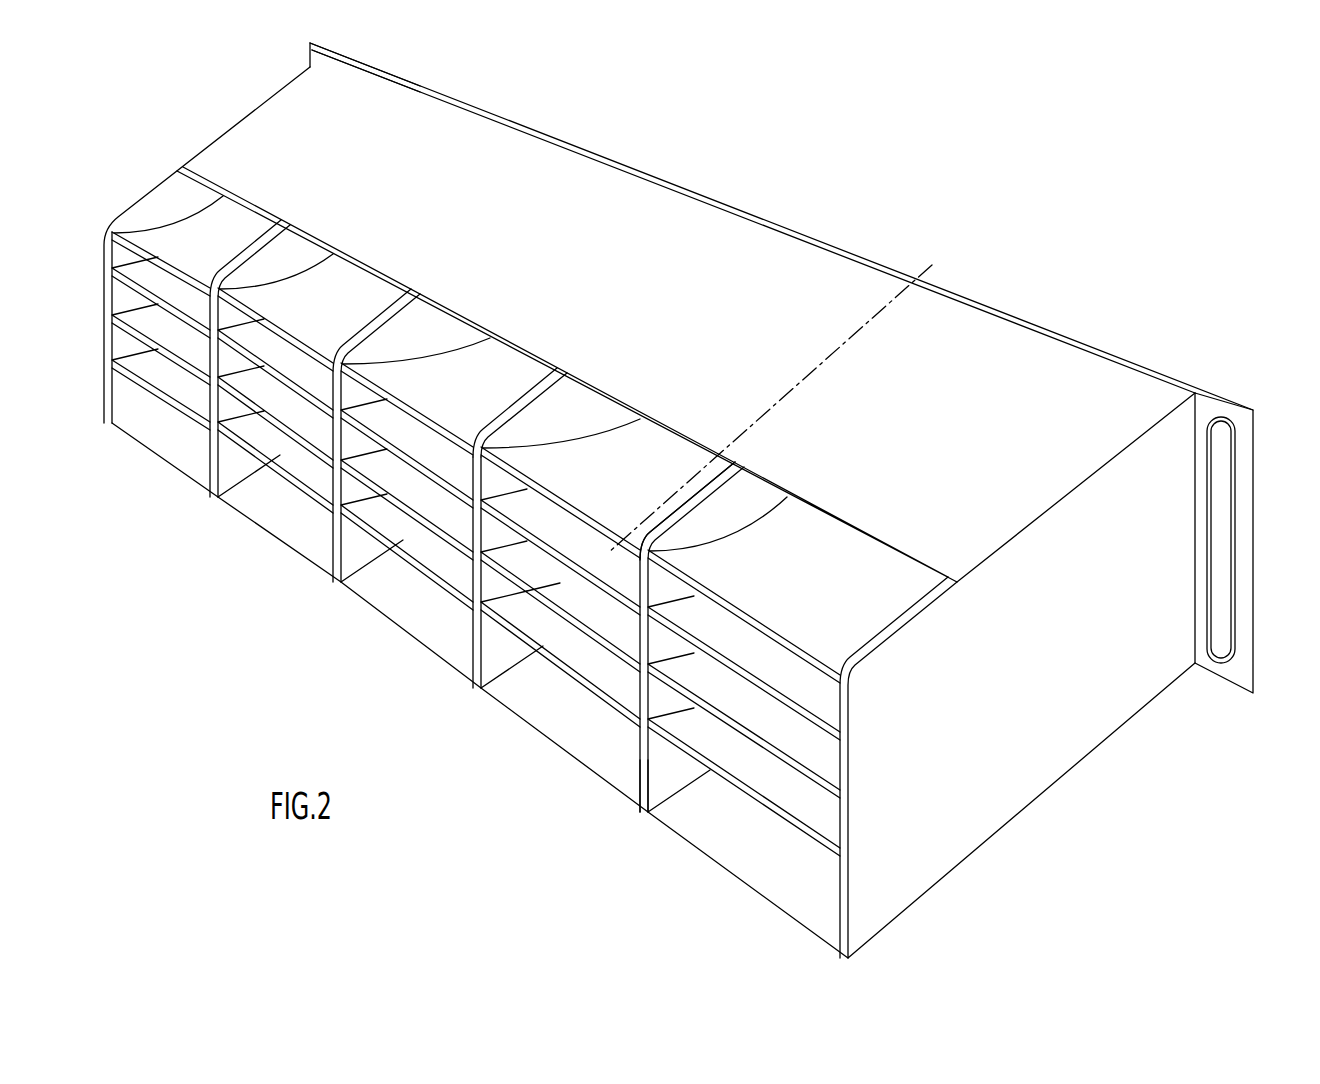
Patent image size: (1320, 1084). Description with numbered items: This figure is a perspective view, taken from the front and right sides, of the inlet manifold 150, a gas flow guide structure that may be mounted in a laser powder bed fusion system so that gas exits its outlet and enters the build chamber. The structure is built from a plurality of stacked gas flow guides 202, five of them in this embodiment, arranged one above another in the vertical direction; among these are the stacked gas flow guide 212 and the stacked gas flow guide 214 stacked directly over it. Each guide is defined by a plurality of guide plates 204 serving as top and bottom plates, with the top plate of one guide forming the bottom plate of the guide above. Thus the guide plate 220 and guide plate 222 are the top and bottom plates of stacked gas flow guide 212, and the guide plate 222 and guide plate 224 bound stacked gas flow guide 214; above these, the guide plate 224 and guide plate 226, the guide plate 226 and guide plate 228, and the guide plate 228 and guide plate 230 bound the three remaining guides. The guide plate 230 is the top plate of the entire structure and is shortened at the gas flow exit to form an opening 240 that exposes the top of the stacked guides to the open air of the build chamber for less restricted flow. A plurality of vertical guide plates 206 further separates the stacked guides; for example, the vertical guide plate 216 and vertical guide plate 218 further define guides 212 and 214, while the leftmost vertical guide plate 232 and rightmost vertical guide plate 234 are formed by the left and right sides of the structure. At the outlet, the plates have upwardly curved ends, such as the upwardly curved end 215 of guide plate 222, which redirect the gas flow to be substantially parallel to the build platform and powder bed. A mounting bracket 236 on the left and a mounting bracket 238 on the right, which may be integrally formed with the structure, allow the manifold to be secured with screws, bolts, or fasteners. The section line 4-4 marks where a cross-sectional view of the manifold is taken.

The inlet manifold 150 is at (512, 120).
The stacked gas flow guides 202 is at (704, 499).
The guide plates 204 is at (168, 405).
The vertical guide plates 206 is at (213, 463).
The stacked gas flow guide 212 is at (617, 753).
The stacked gas flow guide 214 is at (632, 688).
The upwardly curved end 215 is at (567, 645).
The vertical guide plate 216 is at (477, 658).
The vertical guide plate 218 is at (640, 772).
The guide plate 220 is at (513, 680).
The guide plate 222 is at (498, 608).
The guide plate 224 is at (500, 558).
The guide plate 226 is at (500, 507).
The guide plate 228 is at (506, 418).
The guide plate 230 is at (660, 392).
The leftmost vertical guide plate 232 is at (146, 194).
The rightmost vertical guide plate 234 is at (978, 777).
The mounting bracket 236 is at (310, 62).
The mounting bracket 238 is at (1255, 463).
The opening 240 is at (672, 470).
The line 4- 4 is at (552, 528).